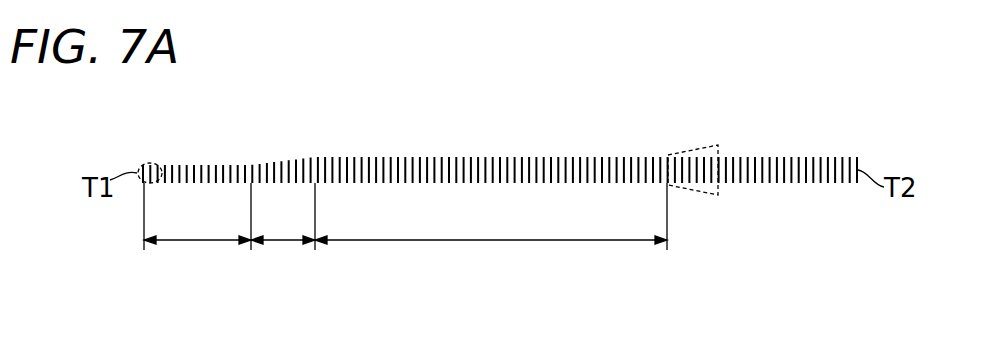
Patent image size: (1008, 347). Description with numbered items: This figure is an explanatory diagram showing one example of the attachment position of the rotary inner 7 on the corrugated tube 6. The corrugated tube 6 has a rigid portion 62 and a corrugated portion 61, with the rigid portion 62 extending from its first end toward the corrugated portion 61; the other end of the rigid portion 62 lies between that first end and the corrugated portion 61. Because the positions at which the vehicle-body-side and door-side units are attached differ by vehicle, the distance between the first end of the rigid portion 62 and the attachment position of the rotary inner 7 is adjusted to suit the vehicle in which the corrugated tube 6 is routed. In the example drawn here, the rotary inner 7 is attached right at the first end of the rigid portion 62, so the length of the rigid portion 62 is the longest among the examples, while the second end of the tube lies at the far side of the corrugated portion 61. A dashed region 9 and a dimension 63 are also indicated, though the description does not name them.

The corrugated tube 6 is at (461, 153).
The rotary inner 7 is at (151, 164).
The tap portion 9 is at (690, 146).
The corrugated portion 61 is at (490, 243).
The rigid portion 62 is at (197, 243).
The transition region length 63 is at (282, 243).